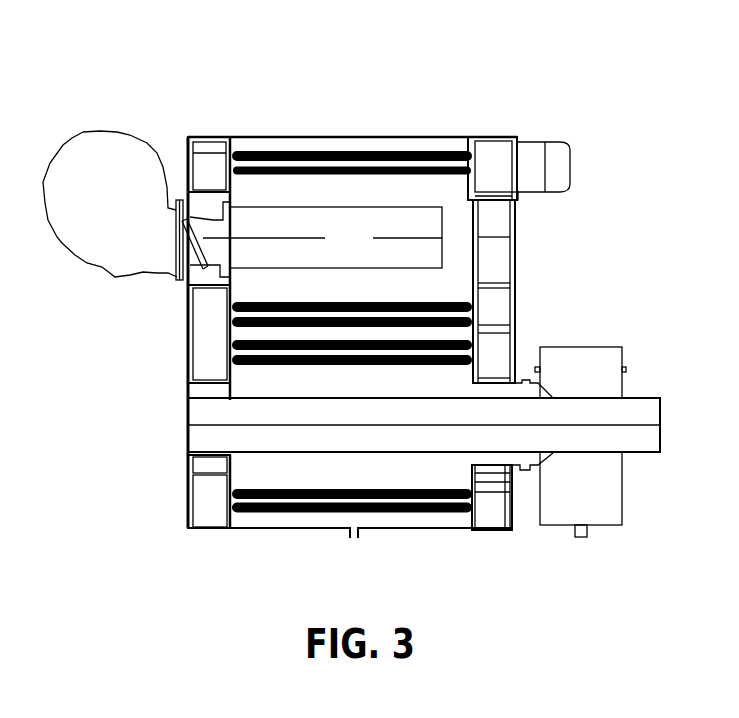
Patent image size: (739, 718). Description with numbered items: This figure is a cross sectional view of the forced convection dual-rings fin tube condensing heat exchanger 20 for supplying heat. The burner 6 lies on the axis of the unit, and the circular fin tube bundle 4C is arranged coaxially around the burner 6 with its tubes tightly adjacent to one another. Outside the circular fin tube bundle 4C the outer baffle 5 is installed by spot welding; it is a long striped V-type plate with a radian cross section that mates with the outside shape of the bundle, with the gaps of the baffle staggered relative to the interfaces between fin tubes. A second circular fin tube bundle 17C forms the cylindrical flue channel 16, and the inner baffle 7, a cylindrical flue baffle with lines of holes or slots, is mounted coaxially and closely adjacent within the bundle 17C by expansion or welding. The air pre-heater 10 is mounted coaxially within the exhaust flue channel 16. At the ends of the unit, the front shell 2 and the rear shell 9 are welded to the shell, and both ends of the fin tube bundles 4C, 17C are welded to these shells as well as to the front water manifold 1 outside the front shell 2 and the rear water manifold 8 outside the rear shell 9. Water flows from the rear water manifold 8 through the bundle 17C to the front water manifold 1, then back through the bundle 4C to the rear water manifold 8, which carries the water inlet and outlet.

The heat exchanger 20 is at (376, 50).
The front water manifold 1 is at (205, 172).
The front shell 2 is at (230, 217).
The outer baffle 5 is at (392, 136).
The circular fin tube bundle 4C is at (448, 172).
The rear water manifold 8 is at (488, 157).
The rear shell 9 is at (515, 188).
The air pre-heater 10 is at (408, 410).
The burner 6 is at (223, 268).
The circular fin tube bundle forming the flue channel 17C is at (228, 352).
The inner baffle 7 is at (263, 491).
The cylindrical flue channel 16 is at (365, 472).